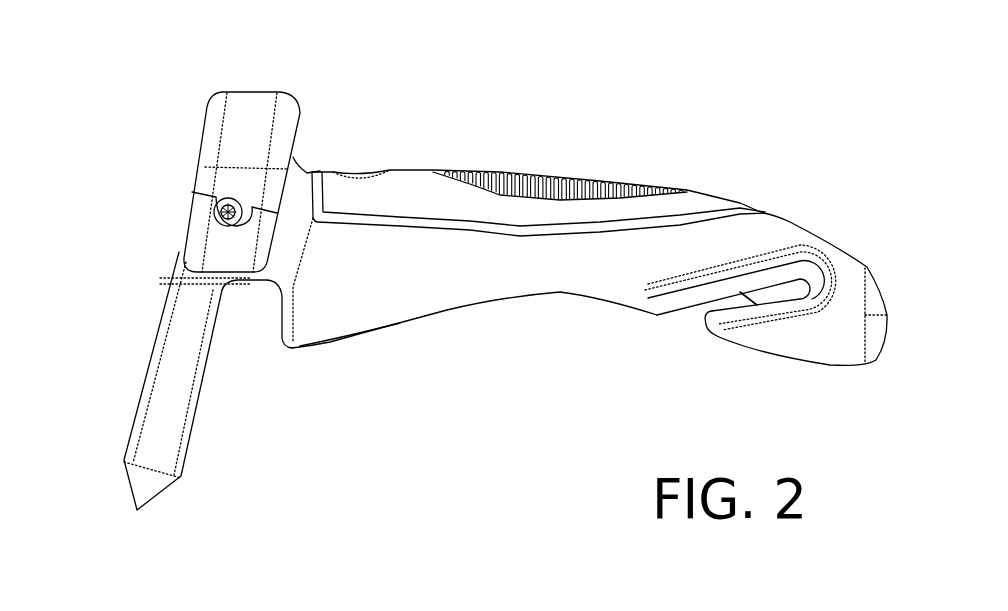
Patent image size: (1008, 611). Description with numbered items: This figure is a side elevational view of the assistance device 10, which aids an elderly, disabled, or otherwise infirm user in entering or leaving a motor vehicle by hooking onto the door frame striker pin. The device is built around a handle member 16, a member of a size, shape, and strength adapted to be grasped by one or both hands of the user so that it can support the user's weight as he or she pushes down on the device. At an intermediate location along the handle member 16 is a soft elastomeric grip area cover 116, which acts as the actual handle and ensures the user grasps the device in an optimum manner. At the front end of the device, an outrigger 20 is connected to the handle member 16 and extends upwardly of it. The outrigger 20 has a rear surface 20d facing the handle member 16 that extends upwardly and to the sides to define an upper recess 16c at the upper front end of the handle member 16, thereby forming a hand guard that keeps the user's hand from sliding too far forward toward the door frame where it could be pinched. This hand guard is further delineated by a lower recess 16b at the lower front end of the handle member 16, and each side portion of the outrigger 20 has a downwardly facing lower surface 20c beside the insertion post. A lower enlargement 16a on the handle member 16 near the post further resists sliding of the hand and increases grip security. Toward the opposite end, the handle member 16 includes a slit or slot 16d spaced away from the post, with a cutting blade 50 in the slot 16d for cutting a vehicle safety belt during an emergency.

The assistance device 10 is at (563, 342).
The handle member 16 is at (450, 310).
The lower enlargement 16a is at (327, 327).
The lower recess 16b is at (240, 290).
The upper recess 16c is at (303, 160).
The slit or slot 16d is at (708, 310).
The grip area cover 116 is at (520, 172).
The outrigger 20 is at (208, 155).
The lower surface 20c is at (212, 275).
The rear surface 20d is at (300, 118).
The cutting blade 50 is at (777, 293).